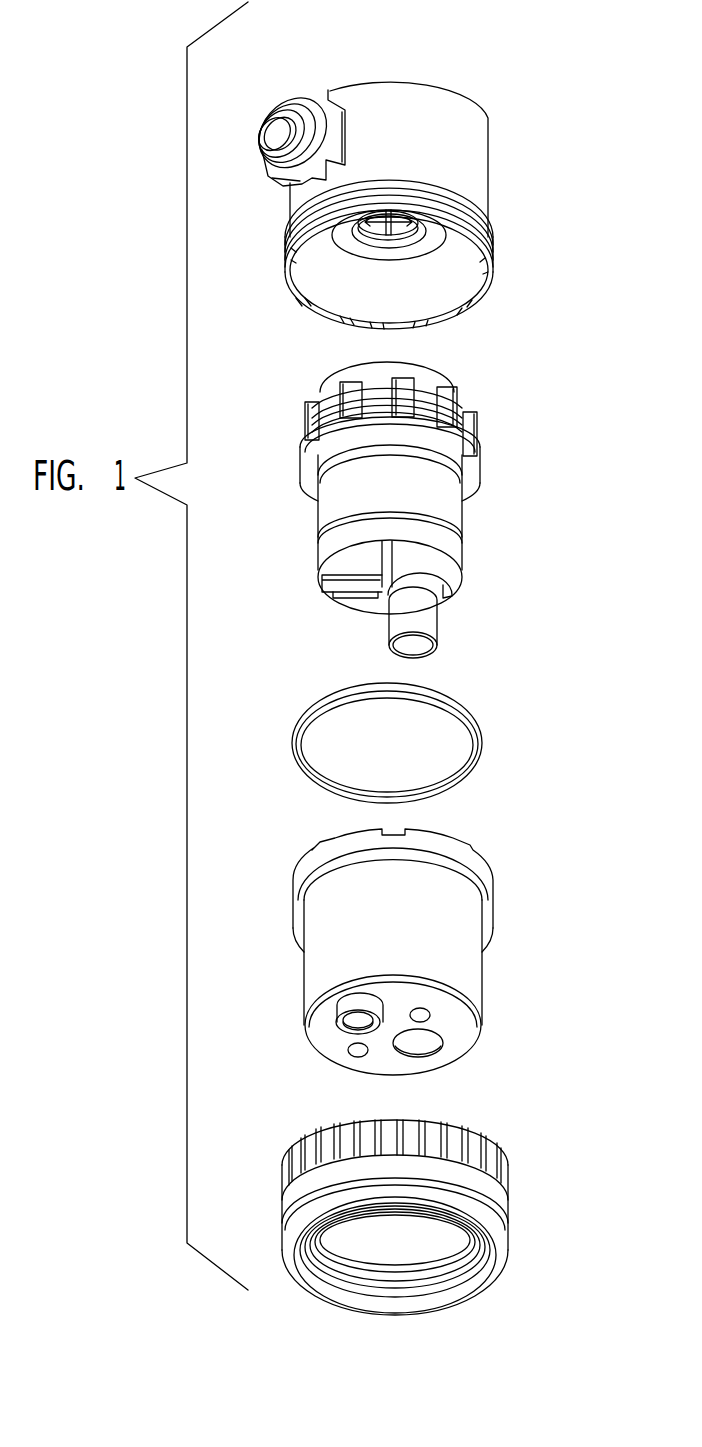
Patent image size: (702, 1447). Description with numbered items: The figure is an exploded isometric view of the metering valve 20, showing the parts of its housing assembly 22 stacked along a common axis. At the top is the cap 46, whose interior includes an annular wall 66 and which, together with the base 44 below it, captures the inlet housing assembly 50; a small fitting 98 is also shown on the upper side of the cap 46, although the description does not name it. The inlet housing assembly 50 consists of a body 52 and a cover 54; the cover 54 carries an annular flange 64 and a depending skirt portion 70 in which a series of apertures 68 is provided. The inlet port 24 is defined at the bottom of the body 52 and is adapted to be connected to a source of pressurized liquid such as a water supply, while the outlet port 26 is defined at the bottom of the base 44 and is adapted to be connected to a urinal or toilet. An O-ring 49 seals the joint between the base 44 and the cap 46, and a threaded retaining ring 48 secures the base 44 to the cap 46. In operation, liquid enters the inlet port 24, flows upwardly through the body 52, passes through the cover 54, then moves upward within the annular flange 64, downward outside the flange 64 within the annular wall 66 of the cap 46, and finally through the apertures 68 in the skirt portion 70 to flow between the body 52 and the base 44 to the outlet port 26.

The metering valve 20 is at (525, 118).
The housing assembly 22 is at (520, 207).
The cap 46 is at (432, 90).
The inlet port fitting 98 is at (270, 103).
The annular wall 66 is at (478, 257).
The inlet housing assembly 50 is at (538, 469).
The cover 54 is at (430, 375).
The annular flange 64 is at (332, 395).
The apertures 68 is at (303, 419).
The depending skirt portion 70 is at (468, 488).
The body 52 is at (318, 512).
The inlet port 24 is at (425, 640).
The O-ring 49 is at (482, 748).
The base 44 is at (478, 972).
The outlet port 26 is at (345, 1025).
The threaded retaining ring 48 is at (483, 1153).